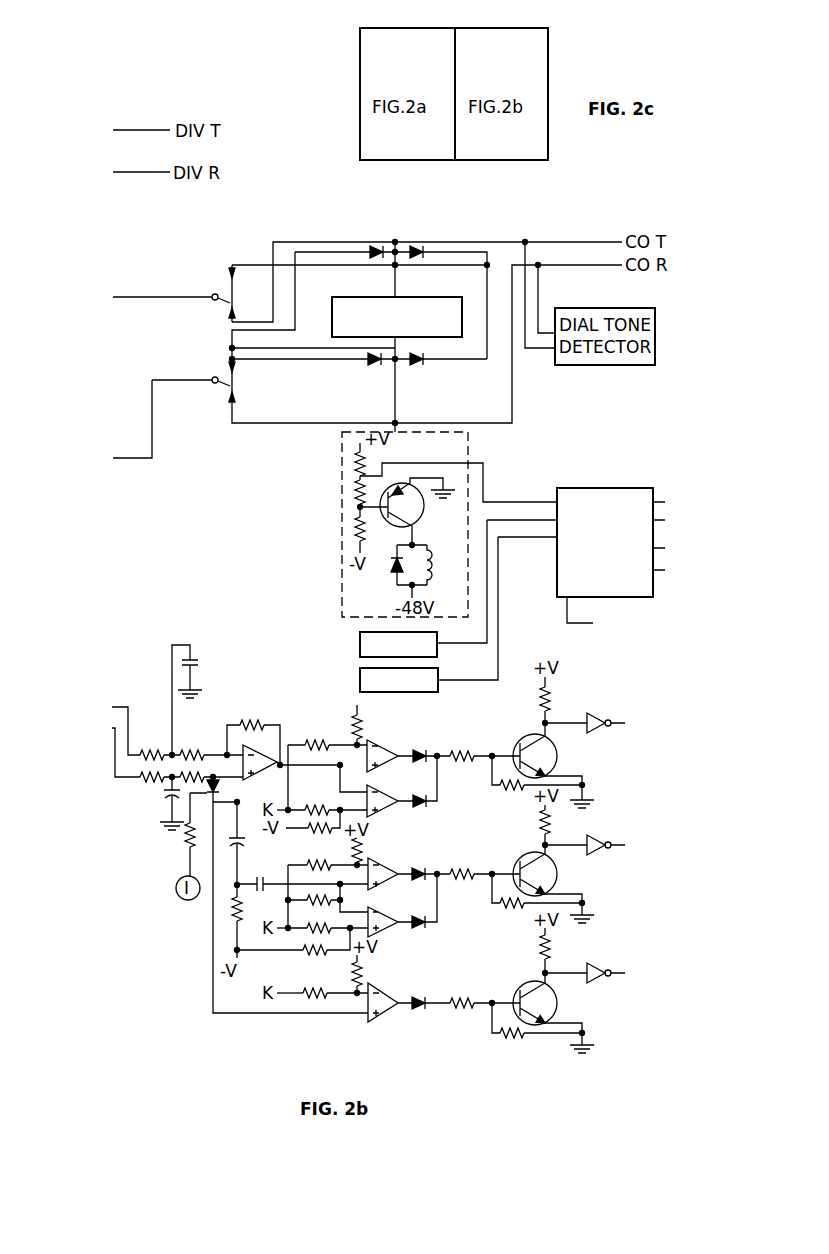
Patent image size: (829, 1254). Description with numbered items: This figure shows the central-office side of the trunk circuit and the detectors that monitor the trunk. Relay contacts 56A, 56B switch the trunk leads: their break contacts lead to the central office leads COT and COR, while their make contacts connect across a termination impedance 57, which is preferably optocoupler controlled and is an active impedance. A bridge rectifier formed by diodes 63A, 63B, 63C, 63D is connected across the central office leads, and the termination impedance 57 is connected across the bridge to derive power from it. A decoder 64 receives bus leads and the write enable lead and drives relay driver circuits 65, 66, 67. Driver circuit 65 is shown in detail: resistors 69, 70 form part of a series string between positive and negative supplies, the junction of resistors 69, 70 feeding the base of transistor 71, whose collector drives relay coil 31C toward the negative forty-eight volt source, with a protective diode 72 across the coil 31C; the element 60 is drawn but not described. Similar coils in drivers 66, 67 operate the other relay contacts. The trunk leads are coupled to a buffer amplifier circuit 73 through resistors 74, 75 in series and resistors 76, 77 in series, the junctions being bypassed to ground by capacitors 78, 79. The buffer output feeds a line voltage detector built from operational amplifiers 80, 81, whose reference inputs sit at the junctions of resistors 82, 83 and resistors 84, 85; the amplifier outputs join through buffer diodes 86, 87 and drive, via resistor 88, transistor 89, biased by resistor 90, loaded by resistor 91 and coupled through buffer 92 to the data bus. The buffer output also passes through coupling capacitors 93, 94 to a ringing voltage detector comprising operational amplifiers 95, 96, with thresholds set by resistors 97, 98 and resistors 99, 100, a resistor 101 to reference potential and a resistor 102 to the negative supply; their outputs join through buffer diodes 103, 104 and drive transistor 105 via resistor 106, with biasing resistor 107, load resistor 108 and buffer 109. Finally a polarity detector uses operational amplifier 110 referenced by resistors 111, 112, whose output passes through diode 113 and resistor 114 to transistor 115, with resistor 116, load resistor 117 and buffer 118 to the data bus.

The contacts 56A is at (222, 295).
The contacts 56B is at (222, 378).
The termination impedance 57 is at (466, 285).
The diode 63A is at (379, 248).
The diode 63B is at (422, 249).
The diode 63C is at (383, 361).
The diode 63D is at (415, 364).
The resistor 60 is at (352, 461).
The relay driver circuit 65 is at (342, 483).
The resistor 69 is at (352, 495).
The resistor 70 is at (352, 536).
The transistor 71 is at (422, 520).
The protective diode 72 is at (390, 576).
The relay coil 31C is at (431, 563).
The decoder 64 is at (593, 488).
The relay driver circuit 66 is at (360, 645).
The relay driver circuit 67 is at (360, 680).
The buffer amplifier circuit 73 is at (283, 750).
The resistor 74 is at (152, 749).
The resistor 75 is at (205, 752).
The resistor 76 is at (148, 782).
The resistor 77 is at (214, 789).
The capacitor 78 is at (206, 663).
The capacitor 79 is at (166, 800).
The operational amplifier 80 is at (400, 754).
The operational amplifier 81 is at (380, 810).
The resistor 82 is at (362, 726).
The resistor 83 is at (342, 735).
The resistor 84 is at (326, 809).
The resistor 85 is at (311, 832).
The buffer diode 86 is at (420, 763).
The buffer diode 87 is at (420, 808).
The resistor 88 is at (478, 748).
The transistor 89 is at (524, 738).
The biasing resistor 90 is at (512, 788).
The resistor 91 is at (550, 697).
The buffer 92 is at (605, 706).
The coupling capacitor 93 is at (258, 832).
The coupling capacitor 94 is at (262, 870).
The operational amplifier 95 is at (392, 870).
The operational amplifier 96 is at (372, 933).
The resistor 97 is at (362, 852).
The resistor 98 is at (332, 858).
The resistor 99 is at (312, 934).
The resistor 100 is at (308, 946).
The resistor 101 is at (330, 908).
The resistor 102 is at (250, 922).
The buffer diode 103 is at (427, 872).
The buffer diode 104 is at (422, 918).
The transistor 105 is at (522, 862).
The resistor 106 is at (477, 878).
The biasing resistor 107 is at (520, 906).
The resistor 108 is at (549, 830).
The buffer 109 is at (615, 838).
The operational amplifier 110 is at (396, 998).
The resistor 111 is at (378, 974).
The resistor 112 is at (321, 996).
The diode 113 is at (421, 999).
The resistor 114 is at (461, 1001).
The transistor 115 is at (528, 988).
The resistor 116 is at (496, 1036).
The resistor 117 is at (550, 954).
The buffer 118 is at (614, 960).